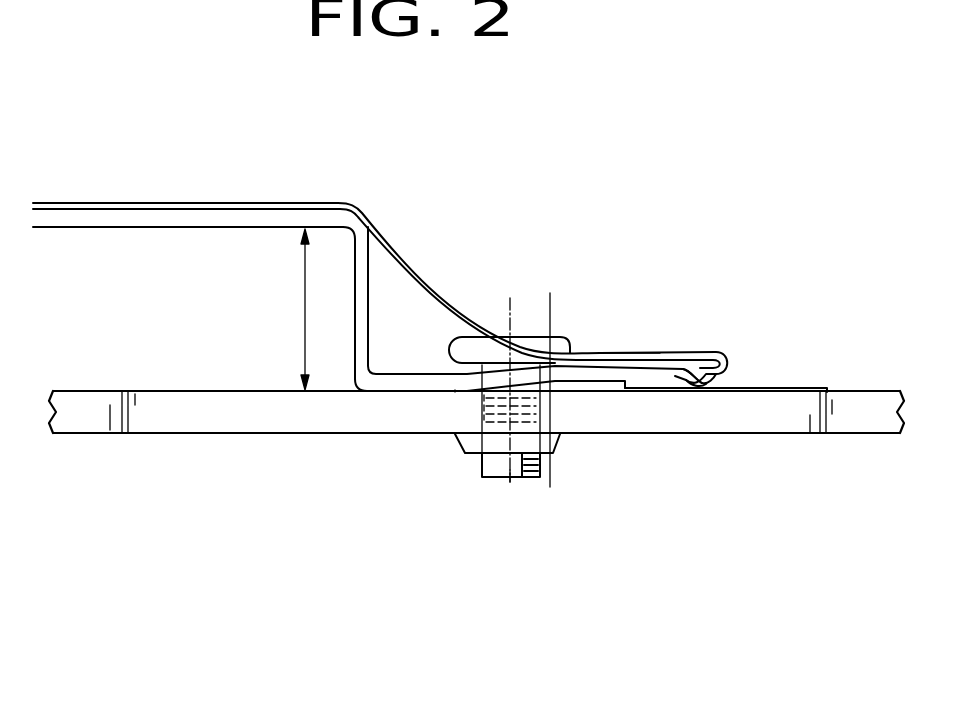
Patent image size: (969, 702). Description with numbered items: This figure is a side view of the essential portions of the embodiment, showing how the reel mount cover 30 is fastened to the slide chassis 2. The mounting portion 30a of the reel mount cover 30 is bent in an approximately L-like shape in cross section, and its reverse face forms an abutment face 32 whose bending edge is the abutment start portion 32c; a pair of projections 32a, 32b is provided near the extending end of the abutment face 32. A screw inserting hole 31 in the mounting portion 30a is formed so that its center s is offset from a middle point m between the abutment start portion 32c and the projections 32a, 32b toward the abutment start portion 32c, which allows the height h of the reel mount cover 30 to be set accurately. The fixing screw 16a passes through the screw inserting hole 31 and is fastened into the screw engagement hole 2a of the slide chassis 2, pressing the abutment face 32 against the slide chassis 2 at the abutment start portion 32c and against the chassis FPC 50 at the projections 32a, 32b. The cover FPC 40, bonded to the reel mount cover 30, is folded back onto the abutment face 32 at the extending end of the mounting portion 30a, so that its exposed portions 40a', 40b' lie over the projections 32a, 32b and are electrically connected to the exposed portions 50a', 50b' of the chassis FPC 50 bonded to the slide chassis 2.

The slide chassis 2 is at (207, 411).
The screw engagement hole 2a is at (484, 418).
The fixing screw 16a is at (533, 338).
The reel mount cover 30 is at (199, 218).
The mounting portion 30a is at (607, 376).
The screw inserting hole 31 is at (455, 390).
The abutment face 32 is at (578, 395).
The projection 32a is at (698, 374).
The projection 32b is at (698, 374).
The abutment start portion 32c is at (378, 392).
The cover FPC 40 is at (412, 282).
The exposed portion 40a' is at (668, 426).
The exposed portion 40b' is at (668, 429).
The chassis FPC 50 is at (781, 388).
The exposed portion 50a' is at (781, 448).
The exposed portion 50b' is at (781, 450).
The height h is at (296, 309).
The center of screw inserting hole s is at (510, 485).
The middle point m is at (550, 487).